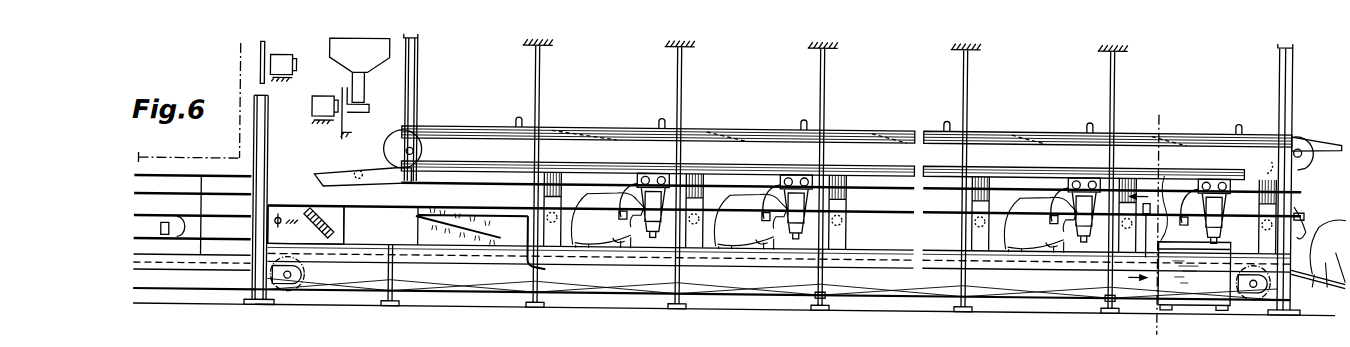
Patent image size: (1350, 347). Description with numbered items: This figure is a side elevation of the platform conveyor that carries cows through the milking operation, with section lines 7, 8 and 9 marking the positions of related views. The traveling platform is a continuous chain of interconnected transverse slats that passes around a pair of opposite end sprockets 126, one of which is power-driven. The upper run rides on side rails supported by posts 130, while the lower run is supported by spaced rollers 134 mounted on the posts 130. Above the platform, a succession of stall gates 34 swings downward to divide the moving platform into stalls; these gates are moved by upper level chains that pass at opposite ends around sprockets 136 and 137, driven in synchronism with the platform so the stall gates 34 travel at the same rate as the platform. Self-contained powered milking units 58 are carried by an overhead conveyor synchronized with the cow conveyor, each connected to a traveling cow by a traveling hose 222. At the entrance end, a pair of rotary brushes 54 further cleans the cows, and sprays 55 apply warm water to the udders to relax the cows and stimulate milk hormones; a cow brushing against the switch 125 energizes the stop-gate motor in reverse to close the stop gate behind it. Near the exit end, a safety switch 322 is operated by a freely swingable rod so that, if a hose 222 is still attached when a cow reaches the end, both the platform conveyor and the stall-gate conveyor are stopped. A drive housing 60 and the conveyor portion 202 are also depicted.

The section line 7- 7 is at (248, 42).
The section line 8- 8 is at (320, 41).
The section line 9- 9 is at (1156, 219).
The stall gate 34 is at (380, 164).
The rotary brush 54 is at (312, 226).
The spray 55 is at (412, 222).
The milking unit 58 is at (652, 166).
The drive housing 60 is at (1196, 294).
The switch 125 is at (282, 214).
The end sprocket 126 is at (290, 291).
The post 130 is at (522, 260).
The roller 134 is at (818, 291).
The sprocket 136 is at (425, 150).
The sprocket 137 is at (1266, 142).
The conveyor 202 is at (880, 343).
The traveling hose 222 is at (1146, 244).
The safety switch 322 is at (1163, 165).